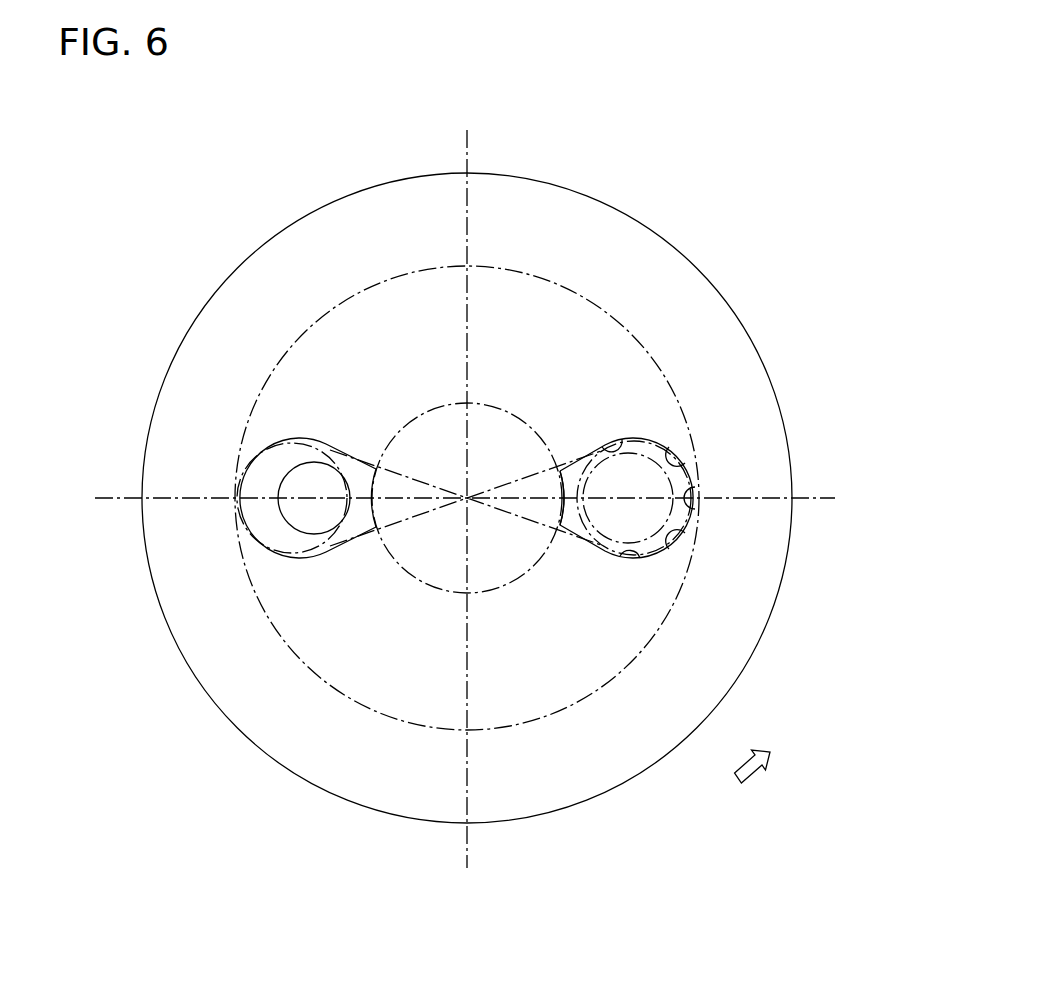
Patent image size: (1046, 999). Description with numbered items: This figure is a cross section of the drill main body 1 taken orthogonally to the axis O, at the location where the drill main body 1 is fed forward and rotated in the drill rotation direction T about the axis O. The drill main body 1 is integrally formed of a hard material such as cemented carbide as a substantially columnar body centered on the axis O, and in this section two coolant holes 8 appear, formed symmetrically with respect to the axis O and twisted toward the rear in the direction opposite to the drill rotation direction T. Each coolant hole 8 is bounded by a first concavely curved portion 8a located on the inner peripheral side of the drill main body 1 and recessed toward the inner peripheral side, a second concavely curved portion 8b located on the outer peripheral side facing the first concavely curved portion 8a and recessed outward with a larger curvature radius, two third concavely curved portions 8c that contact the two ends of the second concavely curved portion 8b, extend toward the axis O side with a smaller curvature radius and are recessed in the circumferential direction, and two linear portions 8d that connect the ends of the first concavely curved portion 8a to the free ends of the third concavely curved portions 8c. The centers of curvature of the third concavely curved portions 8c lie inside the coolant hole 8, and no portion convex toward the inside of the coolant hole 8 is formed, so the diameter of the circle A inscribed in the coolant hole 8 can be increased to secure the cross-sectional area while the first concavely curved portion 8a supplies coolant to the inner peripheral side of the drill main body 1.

The drill main body 1 is at (688, 200).
The coolant hole 8 is at (498, 506).
The first concavely curved portion 8a is at (563, 505).
The second concavely curved portion 8b is at (697, 484).
The third concavely curved portion 8c is at (680, 455).
The linear portion 8d is at (611, 451).
The circle inscribed on the coolant hole A is at (680, 424).
The axis O is at (473, 494).
The drill rotation direction T is at (752, 779).